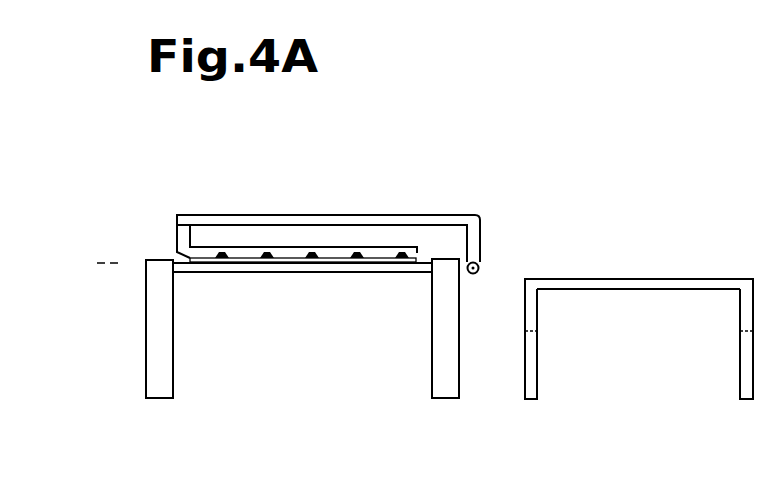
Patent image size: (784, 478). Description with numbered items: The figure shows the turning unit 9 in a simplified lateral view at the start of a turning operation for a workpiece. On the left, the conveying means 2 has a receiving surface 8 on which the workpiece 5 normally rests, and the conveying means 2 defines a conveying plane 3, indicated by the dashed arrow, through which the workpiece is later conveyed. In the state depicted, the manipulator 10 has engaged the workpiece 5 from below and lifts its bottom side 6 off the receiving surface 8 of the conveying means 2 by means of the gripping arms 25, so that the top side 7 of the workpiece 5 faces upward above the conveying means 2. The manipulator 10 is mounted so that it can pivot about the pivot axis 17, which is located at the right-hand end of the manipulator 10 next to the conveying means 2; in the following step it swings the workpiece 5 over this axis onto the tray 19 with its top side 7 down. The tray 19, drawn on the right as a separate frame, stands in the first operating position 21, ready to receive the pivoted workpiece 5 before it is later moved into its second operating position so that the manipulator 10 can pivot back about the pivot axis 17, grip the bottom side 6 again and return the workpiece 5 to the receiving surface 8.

The conveying means 2 is at (392, 137).
The conveying plane 3 is at (133, 258).
The workpiece 5 is at (208, 257).
The bottom side 6 is at (283, 268).
The top side 7 is at (335, 255).
The receiving surface 8 is at (181, 258).
The turning unit 9 is at (630, 118).
The manipulator 10 is at (472, 193).
The pivot axis 17 is at (479, 262).
The tray 19 is at (732, 242).
The first operating position 21 is at (675, 193).
The gripping arms 25 is at (293, 250).